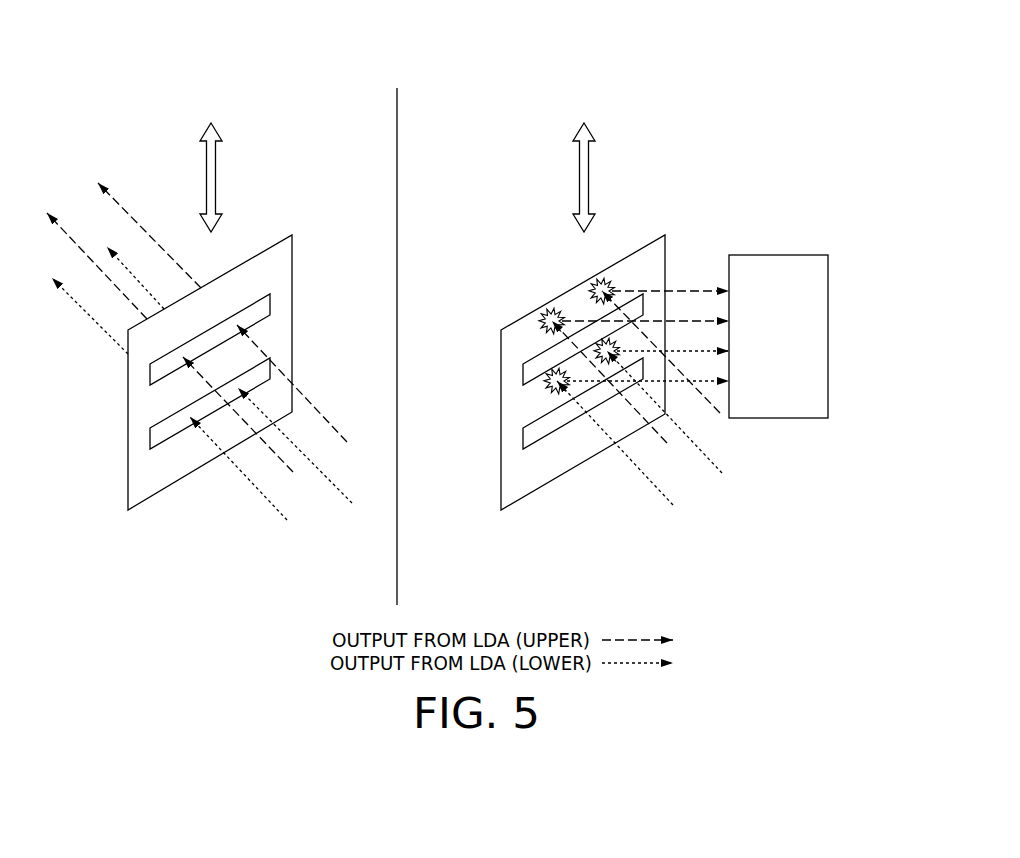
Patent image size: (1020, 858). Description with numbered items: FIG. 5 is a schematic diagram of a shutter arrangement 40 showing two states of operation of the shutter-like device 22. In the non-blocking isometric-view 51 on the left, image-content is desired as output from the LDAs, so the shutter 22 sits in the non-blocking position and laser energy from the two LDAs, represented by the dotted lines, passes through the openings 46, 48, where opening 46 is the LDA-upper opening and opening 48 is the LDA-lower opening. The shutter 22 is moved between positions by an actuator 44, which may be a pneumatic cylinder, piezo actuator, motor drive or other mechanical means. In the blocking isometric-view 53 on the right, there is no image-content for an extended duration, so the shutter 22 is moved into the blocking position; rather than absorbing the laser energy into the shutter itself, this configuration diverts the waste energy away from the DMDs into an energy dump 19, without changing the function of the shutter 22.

The shutter system 40 is at (548, 77).
The actuator 44 is at (206, 178).
The shutter-like device 22 is at (283, 263).
The LDA-upper opening 46 is at (152, 373).
The LDA-lower opening 48 is at (152, 438).
The non-blocking isometric-view 51 is at (112, 510).
The blocking isometric-view 53 is at (486, 510).
The energy dump 19 is at (777, 254).